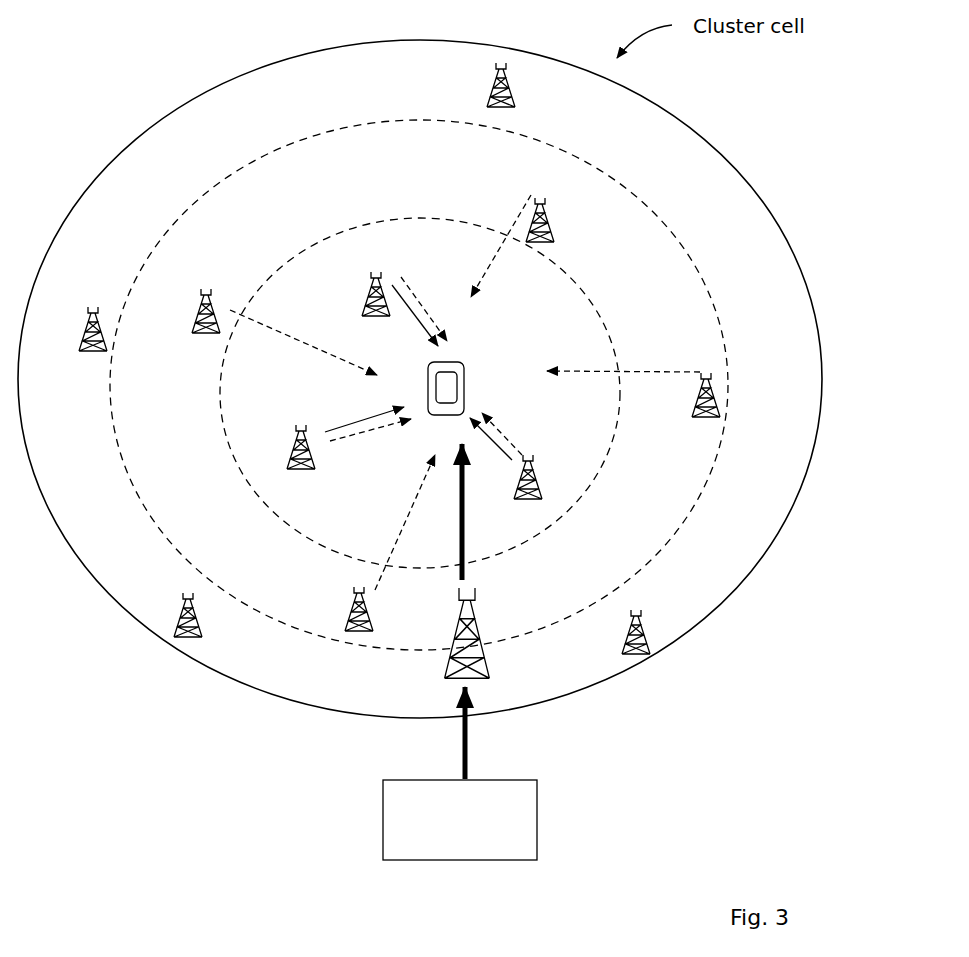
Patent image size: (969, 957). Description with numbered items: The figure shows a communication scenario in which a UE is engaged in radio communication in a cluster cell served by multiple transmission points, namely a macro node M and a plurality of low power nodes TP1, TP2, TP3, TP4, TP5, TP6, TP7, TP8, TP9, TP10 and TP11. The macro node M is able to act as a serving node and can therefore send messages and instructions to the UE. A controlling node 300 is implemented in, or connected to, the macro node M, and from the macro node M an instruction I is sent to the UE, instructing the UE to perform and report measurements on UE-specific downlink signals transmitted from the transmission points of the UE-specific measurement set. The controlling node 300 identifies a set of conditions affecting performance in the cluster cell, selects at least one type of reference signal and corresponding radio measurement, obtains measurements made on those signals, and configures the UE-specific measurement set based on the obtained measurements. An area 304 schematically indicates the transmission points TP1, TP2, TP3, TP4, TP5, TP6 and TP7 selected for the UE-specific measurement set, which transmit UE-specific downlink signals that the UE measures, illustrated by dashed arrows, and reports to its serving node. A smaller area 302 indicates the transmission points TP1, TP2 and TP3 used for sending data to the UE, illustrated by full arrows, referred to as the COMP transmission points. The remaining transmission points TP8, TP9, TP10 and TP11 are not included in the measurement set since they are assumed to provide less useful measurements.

The controlling node 300 is at (383, 816).
The area 302 is at (598, 313).
The area 304 is at (728, 342).
The element UE is at (465, 368).
The macro node M is at (455, 632).
The instruction I is at (472, 512).
The transmission point TP1 is at (362, 305).
The transmission point TP2 is at (540, 488).
The transmission point TP3 is at (290, 453).
The transmission point TP4 is at (195, 326).
The transmission point TP5 is at (552, 228).
The transmission point TP6 is at (693, 400).
The transmission point TP7 is at (348, 614).
The transmission point TP8 is at (178, 622).
The transmission point TP9 is at (82, 343).
The transmission point TP10 is at (487, 95).
The transmission point TP11 is at (622, 638).